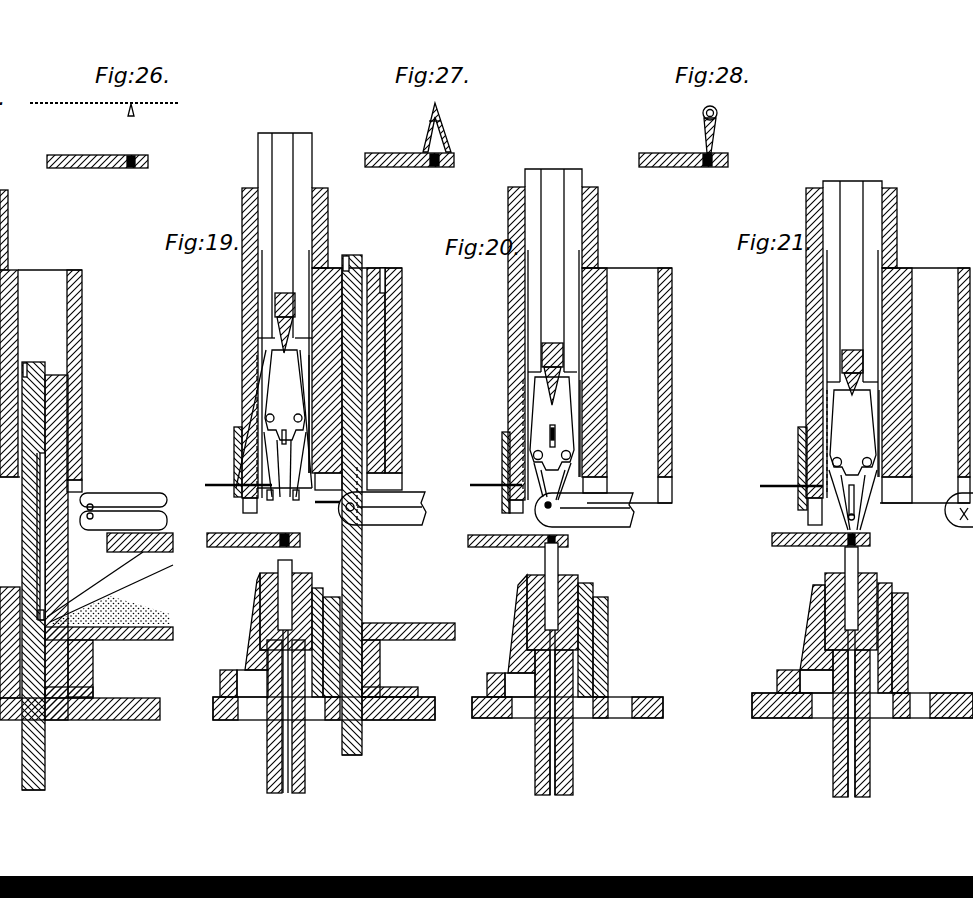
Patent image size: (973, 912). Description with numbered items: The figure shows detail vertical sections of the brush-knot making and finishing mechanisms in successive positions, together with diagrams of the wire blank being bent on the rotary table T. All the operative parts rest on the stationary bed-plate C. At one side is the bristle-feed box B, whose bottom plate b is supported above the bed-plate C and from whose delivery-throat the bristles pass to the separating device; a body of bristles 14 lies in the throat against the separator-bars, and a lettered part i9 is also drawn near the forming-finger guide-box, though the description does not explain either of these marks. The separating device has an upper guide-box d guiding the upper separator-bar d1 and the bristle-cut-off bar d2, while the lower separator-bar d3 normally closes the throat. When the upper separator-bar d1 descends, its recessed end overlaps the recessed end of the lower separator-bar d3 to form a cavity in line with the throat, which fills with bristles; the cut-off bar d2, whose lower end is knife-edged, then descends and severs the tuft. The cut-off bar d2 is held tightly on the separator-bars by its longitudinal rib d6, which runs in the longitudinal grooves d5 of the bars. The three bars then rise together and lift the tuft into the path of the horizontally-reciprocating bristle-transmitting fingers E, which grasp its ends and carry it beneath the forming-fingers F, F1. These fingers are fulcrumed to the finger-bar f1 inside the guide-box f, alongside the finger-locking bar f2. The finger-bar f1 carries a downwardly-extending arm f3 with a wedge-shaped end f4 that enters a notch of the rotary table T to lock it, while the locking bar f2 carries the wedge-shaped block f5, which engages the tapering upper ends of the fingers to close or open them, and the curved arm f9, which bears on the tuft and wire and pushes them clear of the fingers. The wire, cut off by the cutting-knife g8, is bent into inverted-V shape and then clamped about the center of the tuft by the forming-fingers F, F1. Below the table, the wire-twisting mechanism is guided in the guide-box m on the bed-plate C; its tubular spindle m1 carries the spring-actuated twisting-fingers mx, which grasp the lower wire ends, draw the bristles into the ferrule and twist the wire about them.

In FIG. 26, the rotary table T is at (85, 166).
In FIG. 27, the rotary table T is at (398, 161).
In FIG. 28, the rotary table T is at (662, 161).
In FIG. 19, the rotary table T is at (222, 547).
In FIG. 20, the rotary table T is at (470, 545).
In FIG. 21, the rotary table T is at (778, 547).
In FIG. 18, the upper guide-box d is at (55, 333).
In FIG. 19, the upper guide-box d is at (383, 361).
In FIG. 20, the upper guide-box d is at (627, 385).
In FIG. 21, the upper guide-box d is at (960, 390).
In FIG. 18, the upper separator-bar d1 is at (27, 417).
In FIG. 19, the upper separator-bar d1 is at (362, 360).
In FIG. 18, the bristle-cut-off bar d2 is at (50, 440).
In FIG. 19, the bristle-cut-off bar d2 is at (377, 402).
In FIG. 18, the lower separator-bar d3 is at (32, 768).
In FIG. 19, the lower separator-bar d3 is at (352, 610).
In FIG. 18, the longitudinal grooves d5 is at (42, 500).
In FIG. 19, the longitudinal grooves d5 is at (357, 570).
In FIG. 18, the longitudinal rib d6 is at (45, 587).
In FIG. 18, the bristle-transmitting fingers E is at (168, 505).
In FIG. 19, the bristle-transmitting fingers E is at (408, 503).
In FIG. 20, the bristle-transmitting fingers E is at (625, 497).
In FIG. 21, the bristle-transmitting fingers E is at (958, 525).
In FIG. 18, the bristle-feed box B is at (118, 588).
In FIG. 18, the powder 14 is at (110, 604).
In FIG. 18, the bottom plate b is at (114, 631).
In FIG. 18, the guide-box m is at (46, 642).
In FIG. 19, the guide-box m is at (245, 635).
In FIG. 20, the guide-box m is at (508, 648).
In FIG. 21, the guide-box m is at (812, 640).
In FIG. 19, the tubular spindle m1 is at (267, 773).
In FIG. 20, the tubular spindle m1 is at (554, 712).
In FIG. 21, the tubular spindle m1 is at (835, 765).
In FIG. 19, the twisting-fingers mx is at (278, 565).
In FIG. 20, the twisting-fingers mx is at (545, 565).
In FIG. 21, the twisting-fingers mx is at (846, 562).
In FIG. 18, the bed-plate C is at (118, 713).
In FIG. 19, the bed-plate C is at (225, 713).
In FIG. 20, the bed-plate C is at (484, 713).
In FIG. 21, the bed-plate C is at (767, 713).
In FIG. 19, the guide-box f is at (258, 310).
In FIG. 20, the guide-box f is at (522, 312).
In FIG. 21, the guide-box f is at (812, 317).
In FIG. 19, the finger-bar f1 is at (267, 170).
In FIG. 21, the finger-bar f1 is at (850, 282).
In FIG. 19, the finger-locking bar f2 is at (258, 457).
In FIG. 21, the downwardly-extending arm f3 is at (867, 513).
In FIG. 19, the wedge-shaped end f4 is at (300, 508).
In FIG. 19, the wedge-shaped block f5 is at (272, 347).
In FIG. 20, the wedge-shaped block f5 is at (543, 385).
In FIG. 21, the wedge-shaped block f5 is at (843, 400).
In FIG. 20, the curved arm f9 is at (555, 440).
In FIG. 19, the forming-finger F is at (300, 435).
In FIG. 20, the forming-finger F is at (567, 463).
In FIG. 21, the forming-finger F is at (850, 463).
In FIG. 19, the forming-finger F1 is at (270, 400).
In FIG. 20, the forming-finger F1 is at (537, 438).
In FIG. 21, the forming-finger F1 is at (835, 435).
In FIG. 19, the cutting-knife g8 is at (274, 479).
In FIG. 19, the bracket i9 is at (240, 490).
In FIG. 20, the bracket i9 is at (508, 490).
In FIG. 21, the bracket i9 is at (800, 488).